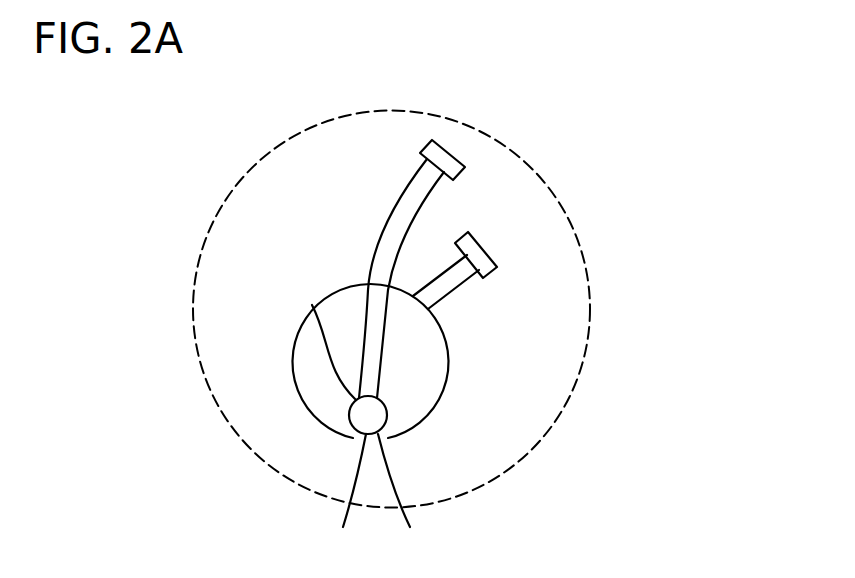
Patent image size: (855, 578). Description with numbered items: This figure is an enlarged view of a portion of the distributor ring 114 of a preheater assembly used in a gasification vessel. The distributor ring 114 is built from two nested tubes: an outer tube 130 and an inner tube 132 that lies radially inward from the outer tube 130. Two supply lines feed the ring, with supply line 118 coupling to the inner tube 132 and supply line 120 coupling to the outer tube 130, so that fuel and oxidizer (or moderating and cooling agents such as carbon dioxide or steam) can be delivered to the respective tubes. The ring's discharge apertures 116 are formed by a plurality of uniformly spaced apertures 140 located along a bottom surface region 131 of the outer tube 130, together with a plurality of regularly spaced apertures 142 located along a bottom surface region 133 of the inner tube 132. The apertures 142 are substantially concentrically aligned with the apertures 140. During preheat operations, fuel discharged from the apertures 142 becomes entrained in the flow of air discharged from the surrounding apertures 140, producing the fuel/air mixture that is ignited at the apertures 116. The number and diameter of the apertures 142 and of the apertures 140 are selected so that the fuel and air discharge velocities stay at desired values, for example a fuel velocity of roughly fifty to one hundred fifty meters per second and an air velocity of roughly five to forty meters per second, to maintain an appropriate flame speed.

The distributor ring 114 is at (262, 361).
The apertures 116 is at (439, 448).
The supply line 118 is at (450, 150).
The supply line 120 is at (483, 247).
The outer tube 130 is at (346, 287).
The bottom surface region 131 is at (303, 405).
The inner tube 132 is at (312, 305).
The bottom surface region 133 is at (407, 498).
The apertures 140 is at (352, 438).
The apertures 142 is at (344, 498).